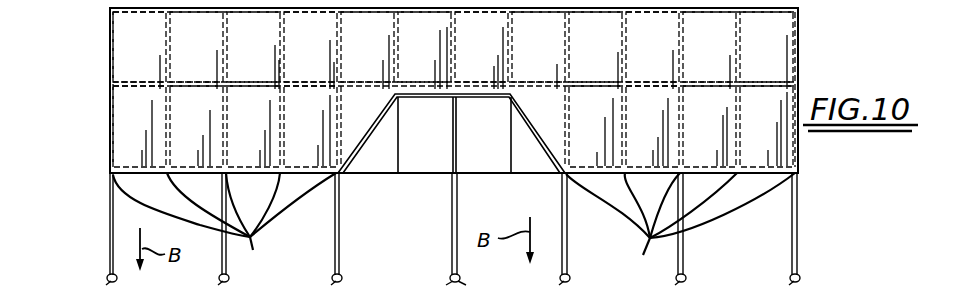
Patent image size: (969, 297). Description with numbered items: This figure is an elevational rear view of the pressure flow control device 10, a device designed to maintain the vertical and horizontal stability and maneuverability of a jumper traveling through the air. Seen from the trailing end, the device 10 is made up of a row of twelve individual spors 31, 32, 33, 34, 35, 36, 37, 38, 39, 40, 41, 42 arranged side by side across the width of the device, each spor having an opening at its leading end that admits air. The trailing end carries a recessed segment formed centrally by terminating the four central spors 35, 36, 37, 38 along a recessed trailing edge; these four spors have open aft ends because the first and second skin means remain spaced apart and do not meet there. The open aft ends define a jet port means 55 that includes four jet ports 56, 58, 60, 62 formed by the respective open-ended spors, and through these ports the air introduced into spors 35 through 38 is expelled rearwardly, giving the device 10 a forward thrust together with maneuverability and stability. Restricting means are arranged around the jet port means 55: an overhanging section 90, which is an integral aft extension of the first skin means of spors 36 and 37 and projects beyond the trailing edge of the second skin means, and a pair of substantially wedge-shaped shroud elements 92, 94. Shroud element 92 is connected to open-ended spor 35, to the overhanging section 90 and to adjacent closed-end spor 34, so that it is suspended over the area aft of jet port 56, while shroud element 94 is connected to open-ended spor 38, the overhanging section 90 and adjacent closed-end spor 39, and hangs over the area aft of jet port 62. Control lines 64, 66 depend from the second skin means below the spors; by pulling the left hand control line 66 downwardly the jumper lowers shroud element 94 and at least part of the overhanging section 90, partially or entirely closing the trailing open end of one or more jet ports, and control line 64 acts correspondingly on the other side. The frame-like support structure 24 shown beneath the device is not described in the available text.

The pressure flow control device 10 is at (100, 54).
The support frame 24 is at (110, 215).
The spor 31 is at (774, 44).
The spor 32 is at (717, 44).
The spor 33 is at (660, 44).
The spor 34 is at (603, 44).
The spor 35 is at (546, 44).
The spor 36 is at (489, 44).
The spor 37 is at (432, 44).
The spor 38 is at (375, 44).
The spor 39 is at (318, 44).
The spor 40 is at (261, 44).
The spor 41 is at (204, 44).
The spor 42 is at (147, 44).
The jet port means 55 is at (441, 181).
The jet port 56 is at (542, 161).
The jet port 58 is at (492, 161).
The jet port 60 is at (436, 161).
The jet port 62 is at (389, 161).
The control line 64 is at (634, 242).
The left hand control line 66 is at (264, 240).
The overhanging section 90 is at (447, 100).
The shroud element 92 is at (555, 112).
The shroud element 94 is at (375, 112).